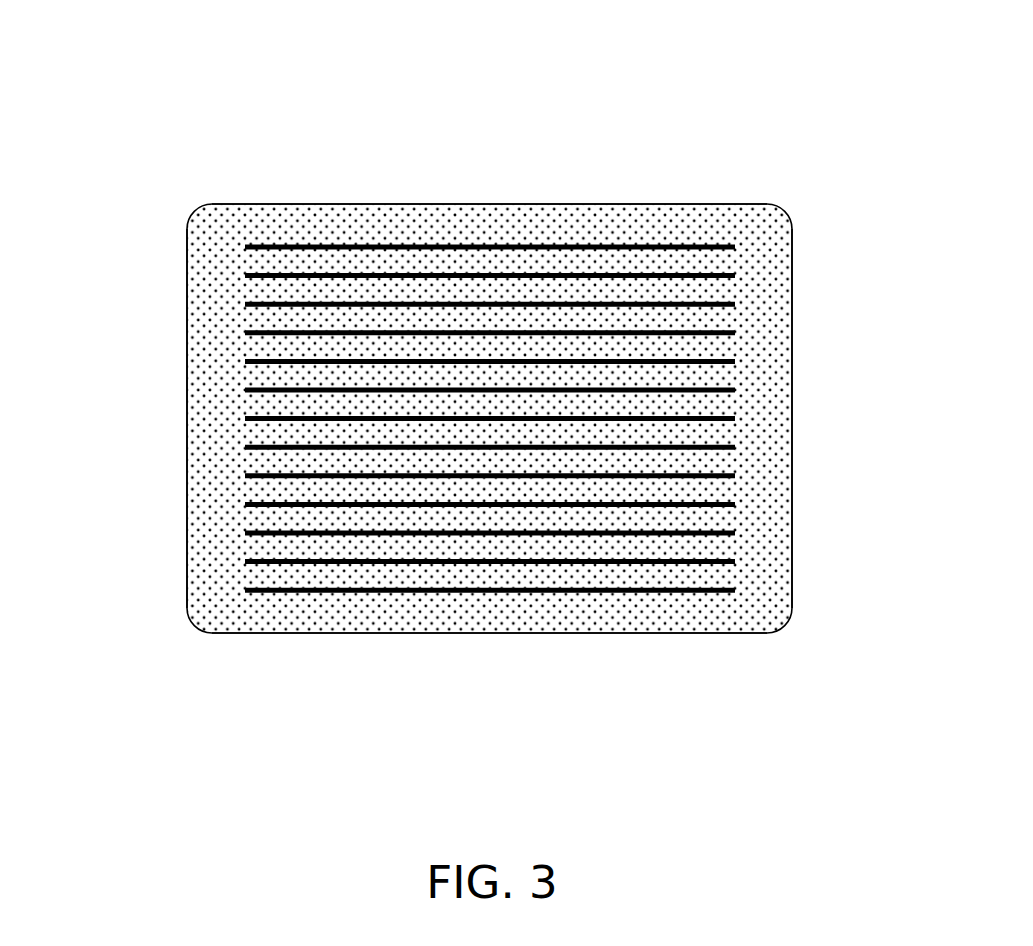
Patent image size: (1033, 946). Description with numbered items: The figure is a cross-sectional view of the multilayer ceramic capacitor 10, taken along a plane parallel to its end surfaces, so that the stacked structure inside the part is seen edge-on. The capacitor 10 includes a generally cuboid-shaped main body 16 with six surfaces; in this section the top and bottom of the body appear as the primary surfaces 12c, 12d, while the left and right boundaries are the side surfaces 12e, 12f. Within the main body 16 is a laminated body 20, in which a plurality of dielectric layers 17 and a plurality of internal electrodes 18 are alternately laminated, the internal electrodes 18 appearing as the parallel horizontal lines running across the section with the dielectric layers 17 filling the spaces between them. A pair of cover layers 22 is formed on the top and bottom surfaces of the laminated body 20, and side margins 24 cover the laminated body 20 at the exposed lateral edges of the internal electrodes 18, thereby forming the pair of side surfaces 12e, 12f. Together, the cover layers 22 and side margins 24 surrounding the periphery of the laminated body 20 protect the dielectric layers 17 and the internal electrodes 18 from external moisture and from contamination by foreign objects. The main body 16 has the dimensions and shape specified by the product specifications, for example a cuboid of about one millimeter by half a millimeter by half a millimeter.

The multilayer ceramic capacitor 10 is at (770, 147).
The primary surface 12c is at (447, 204).
The primary surface 12d is at (460, 633).
The side surface 12e is at (187, 390).
The side surface 12f is at (792, 390).
The main body 16 is at (547, 75).
The dielectric layer 17 is at (520, 322).
The internal electrode 18 is at (605, 303).
The laminated body 20 is at (727, 137).
The cover layer 22 is at (507, 218).
The side margin 24 is at (210, 328).